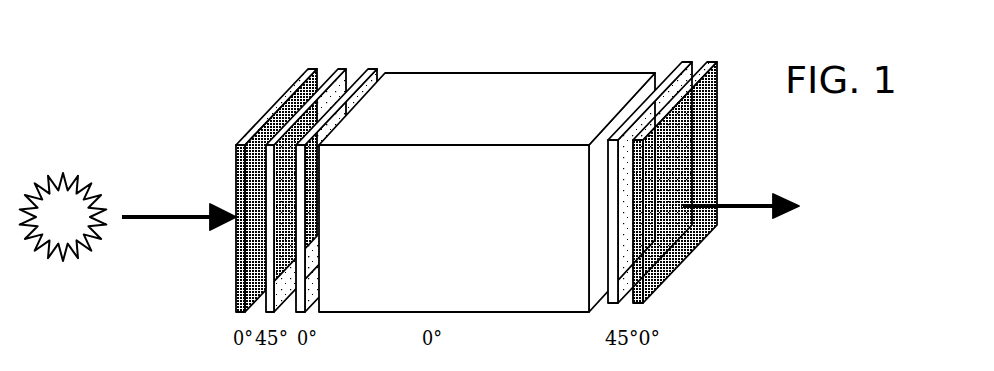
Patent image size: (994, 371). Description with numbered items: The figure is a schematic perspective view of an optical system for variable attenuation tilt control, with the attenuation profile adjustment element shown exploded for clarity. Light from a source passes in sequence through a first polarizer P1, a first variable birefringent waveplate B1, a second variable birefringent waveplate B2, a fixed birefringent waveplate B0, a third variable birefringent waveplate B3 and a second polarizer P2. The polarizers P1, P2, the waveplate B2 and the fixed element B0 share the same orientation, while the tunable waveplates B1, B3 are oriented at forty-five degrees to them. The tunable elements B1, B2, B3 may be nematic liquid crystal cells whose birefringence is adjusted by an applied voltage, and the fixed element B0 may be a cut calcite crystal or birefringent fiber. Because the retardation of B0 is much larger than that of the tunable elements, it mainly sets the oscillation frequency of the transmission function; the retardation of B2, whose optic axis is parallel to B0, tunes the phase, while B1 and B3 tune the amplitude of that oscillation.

The polarizer P1 is at (278, 173).
The variable birefringent waveplate B1 is at (312, 173).
The variable birefringent waveplate B2 is at (341, 173).
The fixed birefringent waveplate B0 is at (487, 173).
The variable birefringent waveplate B3 is at (652, 168).
The polarizer P2 is at (680, 168).